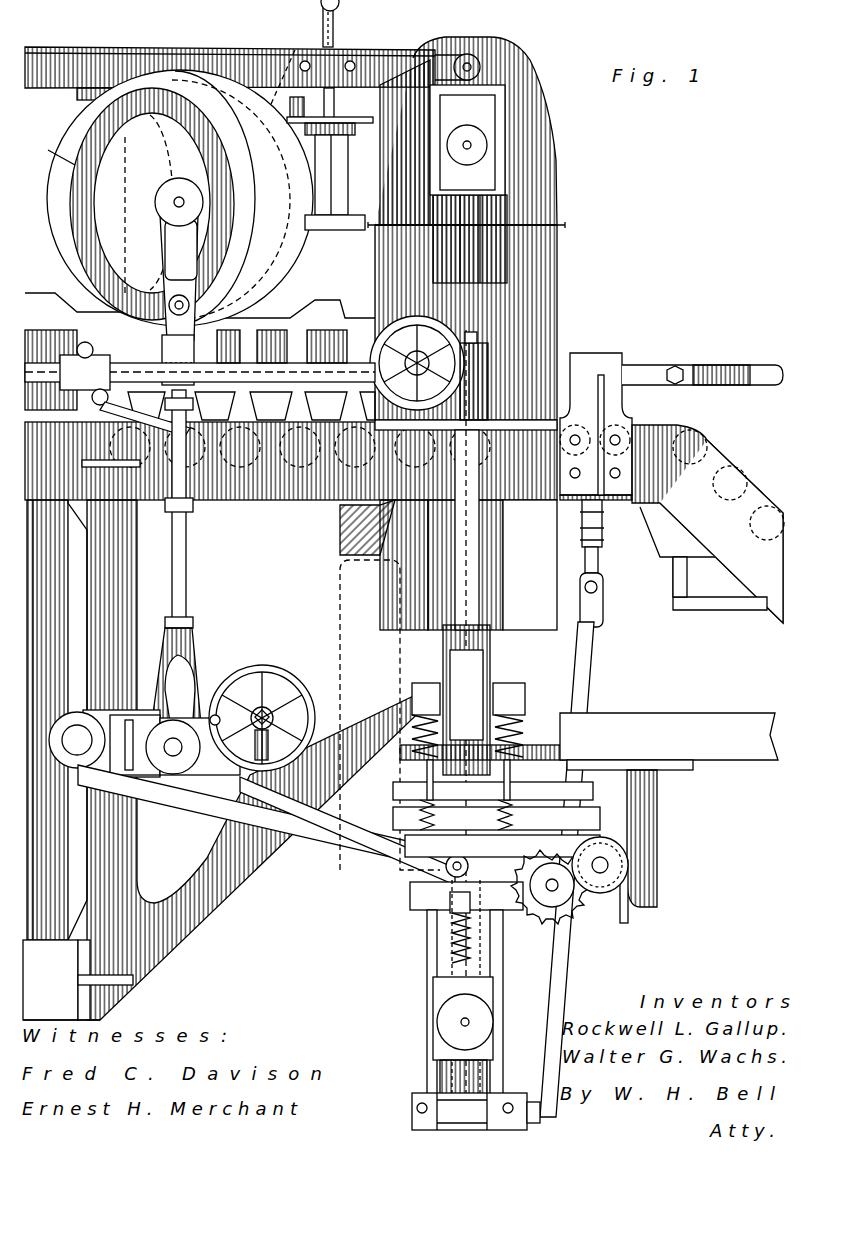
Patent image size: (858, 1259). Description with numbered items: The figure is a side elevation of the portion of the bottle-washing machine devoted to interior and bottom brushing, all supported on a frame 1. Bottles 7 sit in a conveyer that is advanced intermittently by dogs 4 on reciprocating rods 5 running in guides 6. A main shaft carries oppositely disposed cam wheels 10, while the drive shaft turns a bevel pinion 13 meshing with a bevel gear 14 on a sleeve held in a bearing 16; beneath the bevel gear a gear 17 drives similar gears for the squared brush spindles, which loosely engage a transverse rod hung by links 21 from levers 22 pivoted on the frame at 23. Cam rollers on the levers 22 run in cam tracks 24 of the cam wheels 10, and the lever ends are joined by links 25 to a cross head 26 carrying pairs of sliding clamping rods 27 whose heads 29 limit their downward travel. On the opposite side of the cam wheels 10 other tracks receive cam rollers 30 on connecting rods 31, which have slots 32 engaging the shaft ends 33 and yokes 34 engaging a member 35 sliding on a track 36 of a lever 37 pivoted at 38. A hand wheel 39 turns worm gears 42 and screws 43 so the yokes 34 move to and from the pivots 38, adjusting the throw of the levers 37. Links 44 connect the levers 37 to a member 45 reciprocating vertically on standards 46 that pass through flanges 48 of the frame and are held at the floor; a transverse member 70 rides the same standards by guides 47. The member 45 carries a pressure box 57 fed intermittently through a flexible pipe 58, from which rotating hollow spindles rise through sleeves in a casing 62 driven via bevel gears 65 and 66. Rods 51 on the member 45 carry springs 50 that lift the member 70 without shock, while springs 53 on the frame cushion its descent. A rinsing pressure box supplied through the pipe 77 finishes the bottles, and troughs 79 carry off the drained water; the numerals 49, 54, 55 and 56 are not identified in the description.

The frame 1 is at (292, 497).
The dogs 4 is at (92, 403).
The reciprocating rods 5 is at (50, 365).
The guides 6 is at (597, 352).
The bottles 7 is at (290, 337).
The cam wheels 10 is at (70, 138).
The bevel pinion 13 is at (302, 110).
The bevel gear 14 is at (355, 118).
The bearing 16 is at (335, 97).
The gear 17 is at (355, 130).
The links 21 is at (335, 30).
The levers 22 is at (248, 50).
The pivot 23 is at (172, 70).
The cam tracks 24 is at (295, 52).
The links 25 is at (472, 112).
The cross head 26 is at (485, 170).
The clamping rods 27 is at (470, 215).
The heads 29 is at (48, 152).
The cam rollers 30 is at (130, 312).
The connecting rods 31 is at (187, 538).
The slots 32 is at (166, 243).
The shaft ends 33 is at (180, 180).
The yokes 34 is at (195, 675).
The sliding member 35 is at (148, 775).
The track 36 is at (235, 815).
The levers 37 is at (318, 852).
The pivots 38 is at (77, 736).
The hand wheel 39 is at (292, 672).
The worm gears 42 is at (275, 732).
The screws 43 is at (205, 775).
The links 44 is at (450, 960).
The reciprocating member 45 is at (440, 997).
The standards 46 is at (485, 575).
The guides 47 is at (492, 637).
The flanges 48 is at (492, 433).
The boss 49 is at (488, 392).
The springs 50 is at (420, 845).
The rods 51 is at (420, 790).
The springs 53 is at (412, 722).
The guide 54 is at (340, 622).
The bracket 55 is at (360, 537).
The hand wheel 56 is at (445, 335).
The pressure box 57 is at (512, 1098).
The flexible pipe 58 is at (592, 678).
The casing 62 is at (625, 793).
The bevel gear 65 is at (535, 905).
The bevel gear 66 is at (578, 900).
The transverse member 70 is at (410, 695).
The pipe 77 is at (602, 575).
The troughs 79 is at (660, 558).